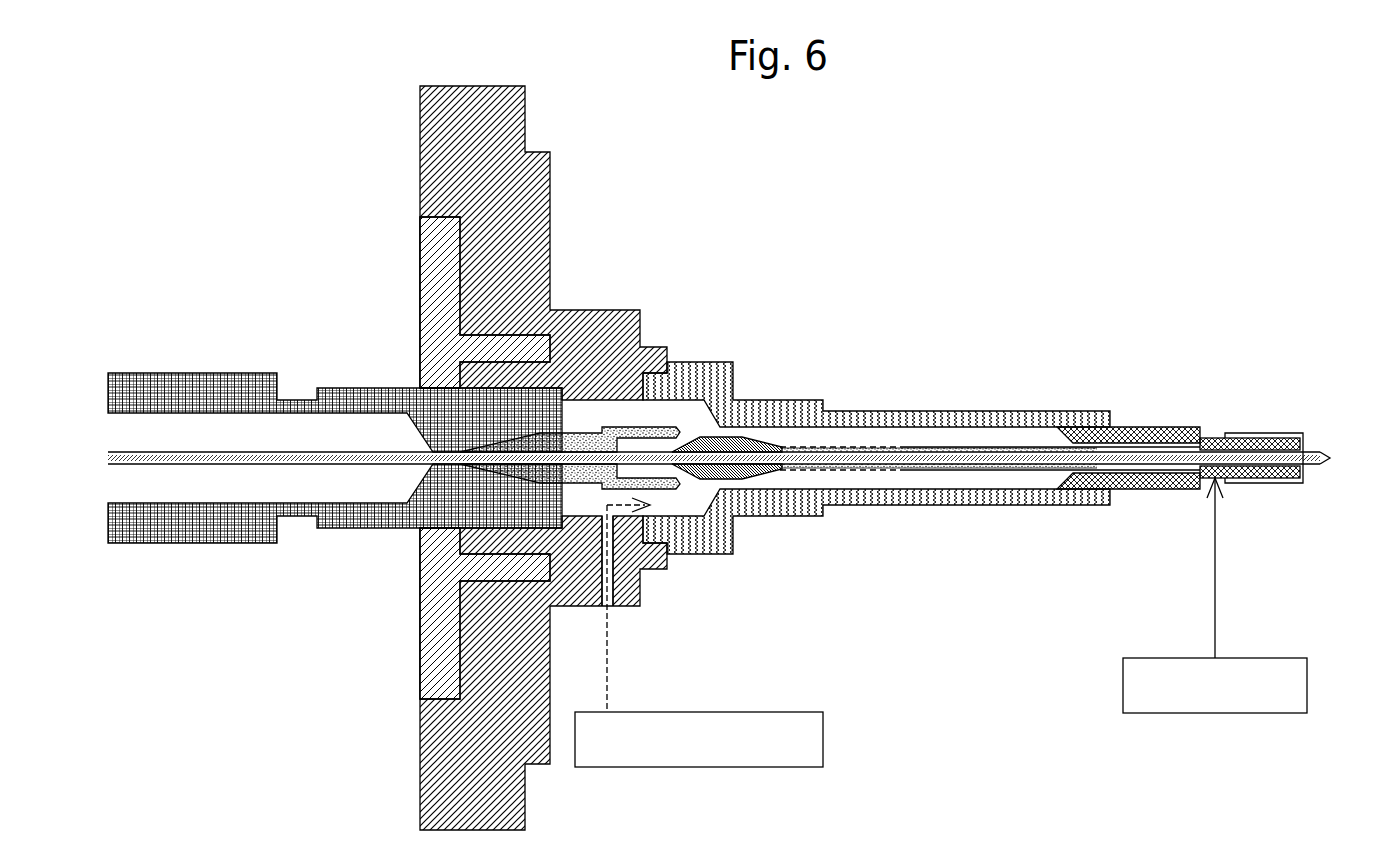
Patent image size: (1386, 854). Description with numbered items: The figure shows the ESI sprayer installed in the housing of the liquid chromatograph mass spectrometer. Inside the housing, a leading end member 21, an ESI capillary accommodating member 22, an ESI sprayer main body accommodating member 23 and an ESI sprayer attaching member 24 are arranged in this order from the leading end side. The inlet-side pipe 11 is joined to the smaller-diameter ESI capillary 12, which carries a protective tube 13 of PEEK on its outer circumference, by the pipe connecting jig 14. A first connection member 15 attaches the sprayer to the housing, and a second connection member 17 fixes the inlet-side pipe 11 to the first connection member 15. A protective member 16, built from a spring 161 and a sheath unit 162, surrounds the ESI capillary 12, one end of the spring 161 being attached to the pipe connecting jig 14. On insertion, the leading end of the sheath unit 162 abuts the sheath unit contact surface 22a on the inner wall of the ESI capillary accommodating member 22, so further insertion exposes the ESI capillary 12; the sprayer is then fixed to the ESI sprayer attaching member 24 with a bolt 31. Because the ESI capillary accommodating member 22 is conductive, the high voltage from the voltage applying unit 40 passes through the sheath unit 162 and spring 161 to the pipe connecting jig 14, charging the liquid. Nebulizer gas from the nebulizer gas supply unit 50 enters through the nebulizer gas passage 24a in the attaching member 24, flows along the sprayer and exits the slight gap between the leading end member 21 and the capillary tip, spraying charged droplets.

The inlet-side pipe 11 is at (722, 502).
The ESI capillary 12 is at (1180, 465).
The protective tube 13 is at (890, 448).
The pipe connecting jig 14 is at (750, 437).
The first connection member 15 is at (355, 522).
The protective member 16 is at (990, 480).
The spring 161 is at (875, 472).
The sheath unit 162 is at (972, 472).
The second connection member 17 is at (665, 493).
The leading end member 21 is at (1317, 478).
The ESI capillary accommodating member 22 is at (1122, 490).
The sheath unit contact surface 22a is at (1202, 440).
The ESI sprayer main body accommodating member 23 is at (1033, 505).
The ESI sprayer attaching member 24 is at (500, 787).
The nebulizer gas passage 24a is at (613, 607).
The bolt 31 is at (420, 592).
The voltage applying unit 40 is at (1250, 713).
The nebulizer gas supply unit 50 is at (702, 767).